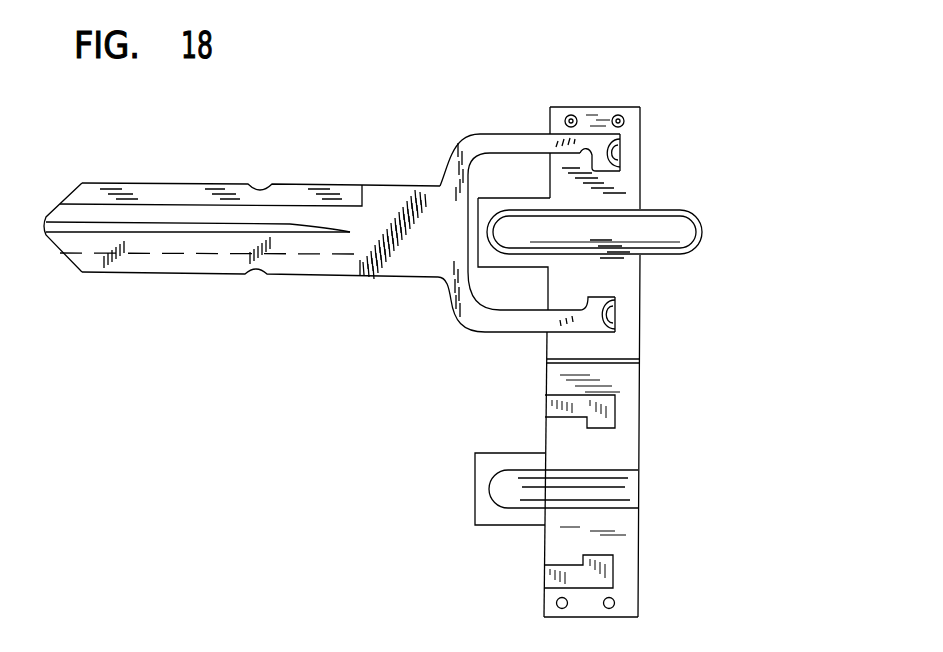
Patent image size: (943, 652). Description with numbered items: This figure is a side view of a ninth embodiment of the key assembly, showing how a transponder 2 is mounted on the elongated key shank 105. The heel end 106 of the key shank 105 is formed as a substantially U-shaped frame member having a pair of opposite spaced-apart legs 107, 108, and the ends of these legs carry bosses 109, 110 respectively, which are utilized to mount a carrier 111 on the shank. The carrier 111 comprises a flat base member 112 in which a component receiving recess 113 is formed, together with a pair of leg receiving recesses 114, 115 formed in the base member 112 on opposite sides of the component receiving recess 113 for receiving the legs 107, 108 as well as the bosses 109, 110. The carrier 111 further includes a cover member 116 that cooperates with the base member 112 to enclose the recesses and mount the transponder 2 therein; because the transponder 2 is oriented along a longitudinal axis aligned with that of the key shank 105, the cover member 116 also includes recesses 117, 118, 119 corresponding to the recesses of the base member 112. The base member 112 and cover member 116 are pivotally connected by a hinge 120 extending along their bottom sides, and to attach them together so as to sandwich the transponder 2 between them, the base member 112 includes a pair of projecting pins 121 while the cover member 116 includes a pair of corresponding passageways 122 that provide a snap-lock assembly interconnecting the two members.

The transponder 2 is at (684, 231).
The key shank 105 is at (188, 265).
The heel end 106 is at (443, 238).
The leg 107 is at (503, 145).
The leg 108 is at (522, 330).
The boss 109 is at (607, 163).
The boss 110 is at (616, 306).
The carrier 111 is at (641, 456).
The base member 112 is at (634, 273).
The component receiving recess 113 is at (575, 252).
The leg receiving recess 114 is at (620, 154).
The leg receiving recess 115 is at (616, 331).
The cover member 116 is at (482, 507).
The recess 117 is at (597, 510).
The recess 118 is at (608, 572).
The recess 119 is at (607, 412).
The hinge 120 is at (604, 362).
The projecting pins 121 is at (616, 114).
The passageways 122 is at (605, 604).